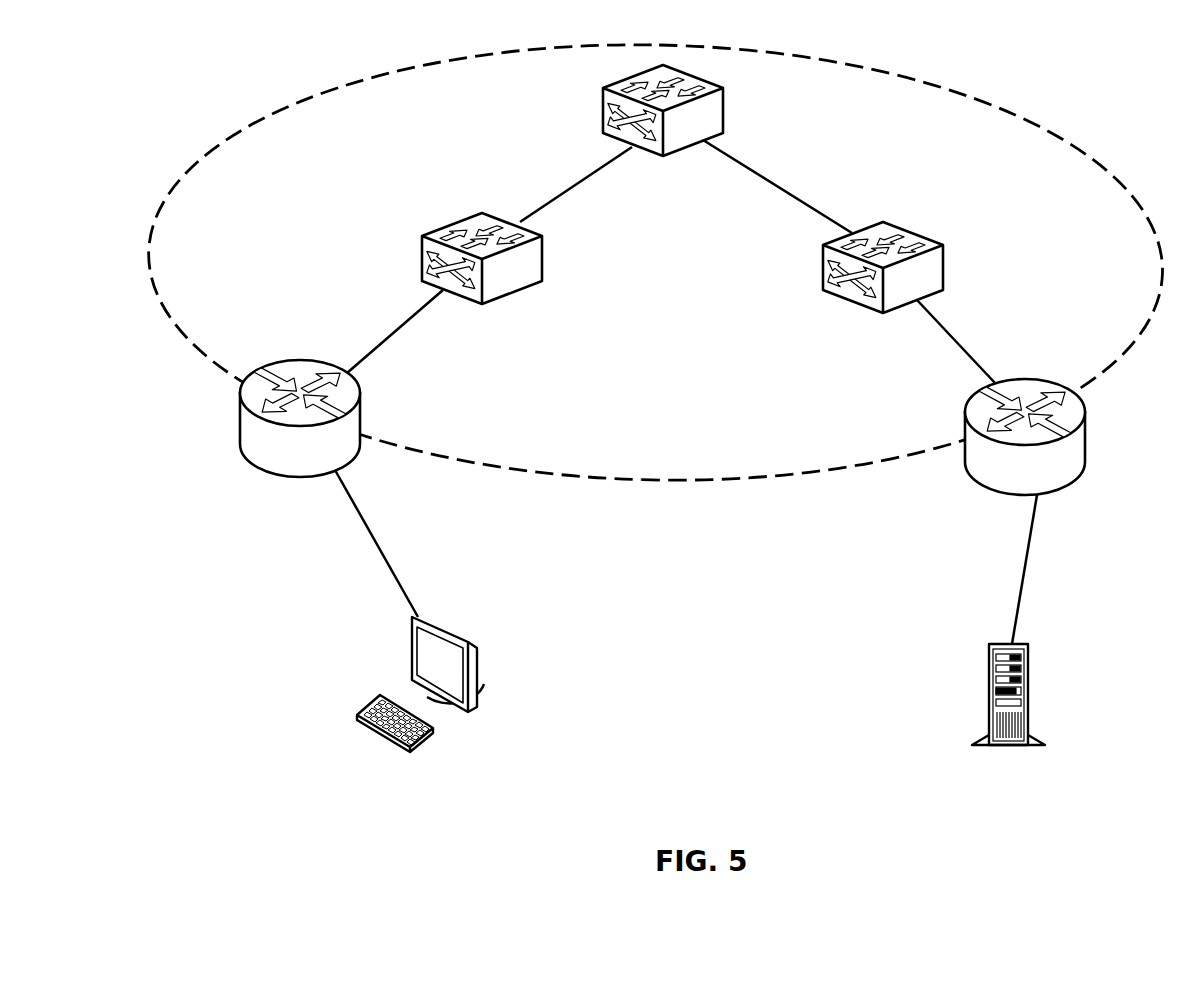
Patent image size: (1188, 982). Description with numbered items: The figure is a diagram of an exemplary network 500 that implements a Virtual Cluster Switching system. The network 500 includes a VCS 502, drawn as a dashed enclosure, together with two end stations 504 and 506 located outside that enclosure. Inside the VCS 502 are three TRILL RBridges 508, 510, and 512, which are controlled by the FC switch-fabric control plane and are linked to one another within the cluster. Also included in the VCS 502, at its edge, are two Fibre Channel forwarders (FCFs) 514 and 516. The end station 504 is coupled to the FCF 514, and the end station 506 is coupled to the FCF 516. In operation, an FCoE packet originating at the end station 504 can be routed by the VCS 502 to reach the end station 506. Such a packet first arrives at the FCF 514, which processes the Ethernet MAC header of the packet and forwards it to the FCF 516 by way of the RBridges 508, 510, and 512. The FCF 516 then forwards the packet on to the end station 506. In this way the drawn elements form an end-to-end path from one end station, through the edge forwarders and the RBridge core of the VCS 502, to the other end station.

The network 500 is at (717, 773).
The VCS 502 is at (1010, 115).
The end station 504 is at (410, 655).
The end station 506 is at (1030, 695).
The TRILL RBridge 508 is at (727, 110).
The TRILL RBridge 510 is at (443, 225).
The TRILL RBridge 512 is at (915, 233).
The Fibre Channel forwarder 514 is at (263, 363).
The Fibre Channel forwarder 516 is at (1087, 445).